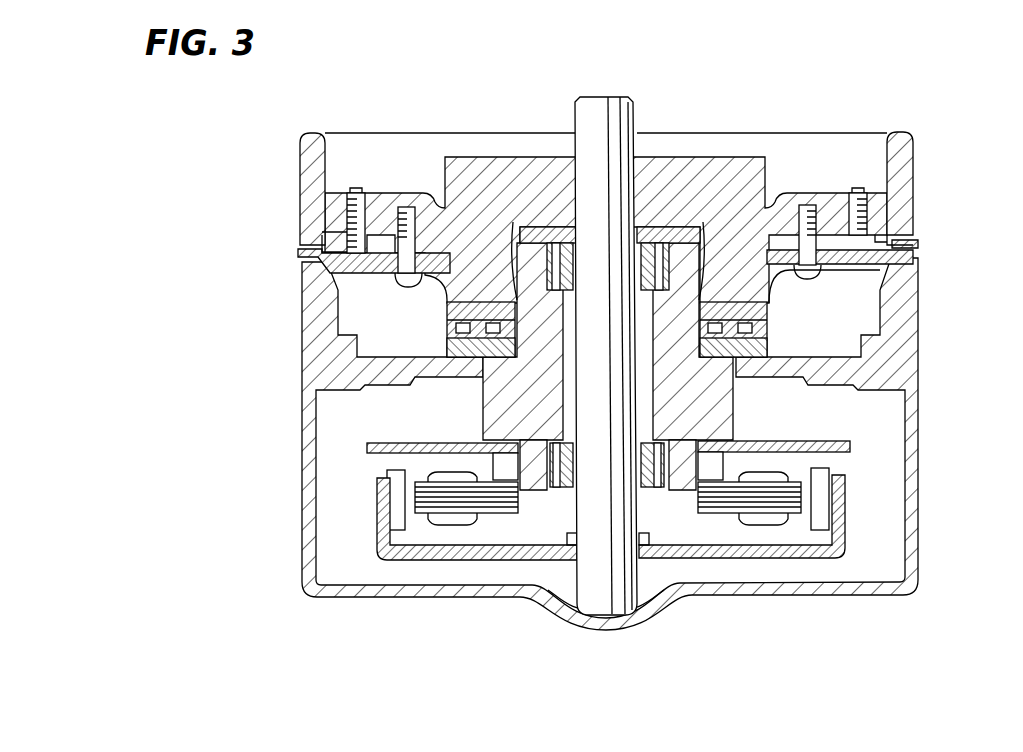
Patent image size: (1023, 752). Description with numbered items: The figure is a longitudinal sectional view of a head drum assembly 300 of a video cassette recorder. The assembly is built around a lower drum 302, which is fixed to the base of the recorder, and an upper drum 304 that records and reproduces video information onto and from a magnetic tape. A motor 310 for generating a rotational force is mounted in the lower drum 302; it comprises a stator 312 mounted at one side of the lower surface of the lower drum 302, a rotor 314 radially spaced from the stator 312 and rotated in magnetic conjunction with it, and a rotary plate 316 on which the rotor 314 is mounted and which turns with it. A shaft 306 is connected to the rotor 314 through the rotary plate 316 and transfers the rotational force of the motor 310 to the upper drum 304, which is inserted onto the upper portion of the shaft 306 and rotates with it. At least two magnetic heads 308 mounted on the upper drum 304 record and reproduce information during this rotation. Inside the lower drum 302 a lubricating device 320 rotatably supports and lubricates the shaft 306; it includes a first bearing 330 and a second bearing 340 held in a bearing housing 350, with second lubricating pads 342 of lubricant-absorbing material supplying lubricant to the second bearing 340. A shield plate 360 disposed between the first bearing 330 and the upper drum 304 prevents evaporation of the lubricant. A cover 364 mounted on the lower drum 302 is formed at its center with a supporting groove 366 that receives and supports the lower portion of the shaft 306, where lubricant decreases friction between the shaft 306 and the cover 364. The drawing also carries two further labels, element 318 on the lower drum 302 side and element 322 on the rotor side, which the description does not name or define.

The head drum assembly 300 is at (351, 98).
The lower drum 302 is at (902, 349).
The upper drum 304 is at (900, 212).
The shaft 306 is at (604, 97).
The magnetic heads 308 is at (918, 246).
The motor 310 is at (905, 706).
The stator 312 is at (761, 513).
The rotor 314 is at (824, 530).
The rotary plate 316 is at (855, 500).
The recess 318 is at (887, 308).
The lubricating device 320 is at (200, 215).
The plate 322 is at (298, 258).
The first bearing 330 is at (447, 316).
The second bearing 340 is at (550, 487).
The second lubricating pads 342 is at (493, 460).
The bearing housing 350 is at (483, 403).
The shield plate 360 is at (397, 232).
The cover 364 is at (367, 447).
The supporting groove 366 is at (562, 595).